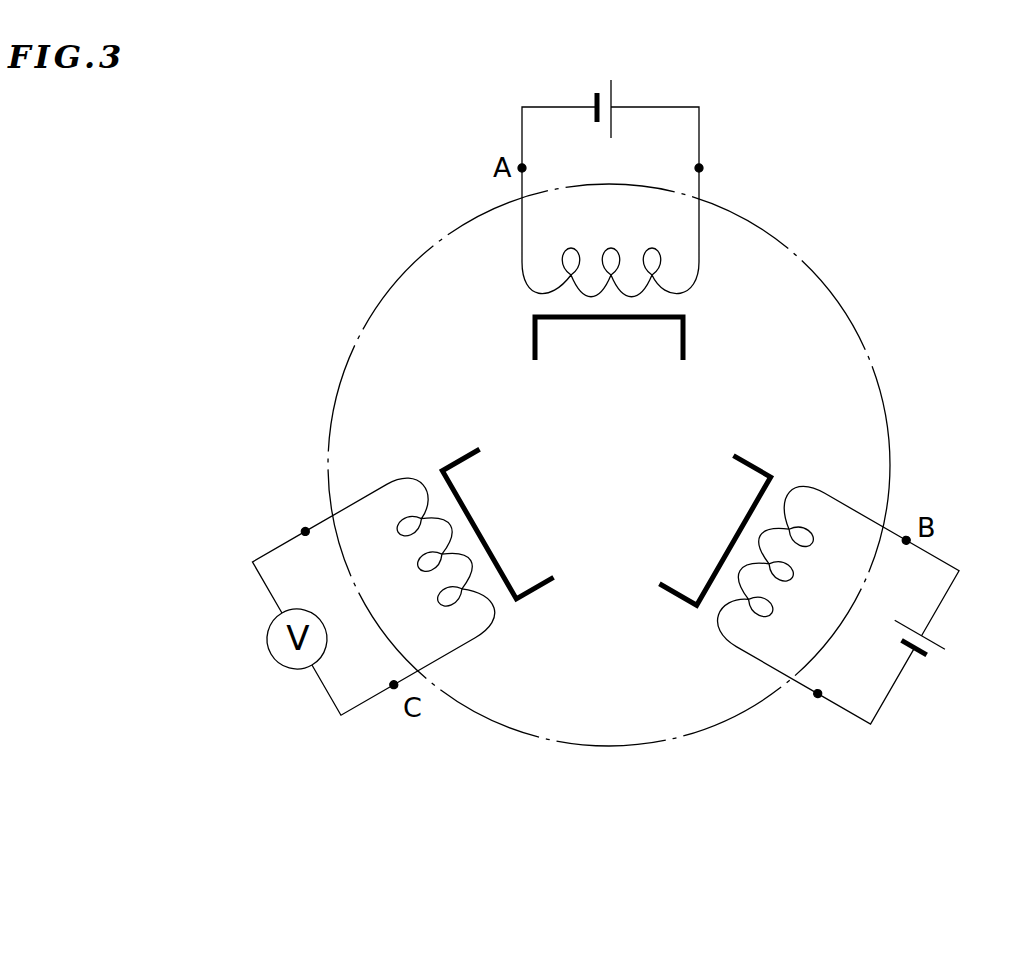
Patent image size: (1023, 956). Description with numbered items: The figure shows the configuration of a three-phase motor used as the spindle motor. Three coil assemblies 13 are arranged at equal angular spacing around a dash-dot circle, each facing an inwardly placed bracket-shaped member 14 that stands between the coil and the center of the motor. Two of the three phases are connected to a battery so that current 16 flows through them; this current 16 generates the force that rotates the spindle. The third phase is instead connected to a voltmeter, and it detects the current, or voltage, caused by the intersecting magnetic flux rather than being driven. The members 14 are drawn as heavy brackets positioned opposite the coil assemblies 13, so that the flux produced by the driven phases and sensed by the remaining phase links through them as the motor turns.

The coil 13 is at (522, 253).
The core member 14 is at (467, 455).
The current 16 is at (700, 187).